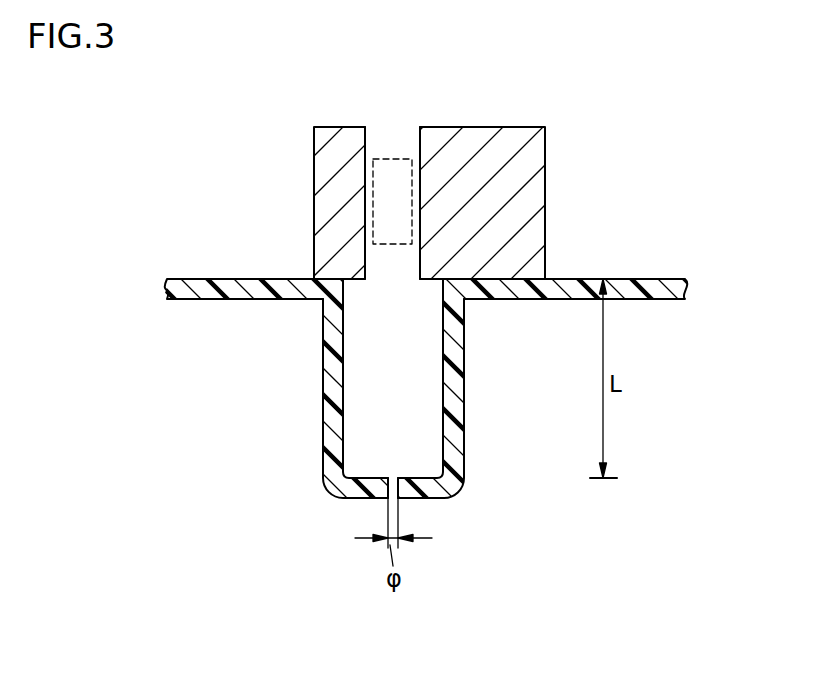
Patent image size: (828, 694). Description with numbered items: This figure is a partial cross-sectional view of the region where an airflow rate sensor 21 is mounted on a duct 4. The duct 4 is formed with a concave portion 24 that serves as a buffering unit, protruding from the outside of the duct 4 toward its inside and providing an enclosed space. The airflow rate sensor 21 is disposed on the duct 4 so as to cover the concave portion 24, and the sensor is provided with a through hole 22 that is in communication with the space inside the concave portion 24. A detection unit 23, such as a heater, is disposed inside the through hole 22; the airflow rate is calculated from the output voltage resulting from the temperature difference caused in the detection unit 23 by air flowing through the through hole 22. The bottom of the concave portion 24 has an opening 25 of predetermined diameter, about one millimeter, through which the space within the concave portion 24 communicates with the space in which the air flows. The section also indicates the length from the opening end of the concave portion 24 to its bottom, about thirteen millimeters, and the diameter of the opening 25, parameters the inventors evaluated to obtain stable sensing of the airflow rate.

The duct 4 is at (198, 288).
The airflow rate sensor 21 is at (501, 196).
The through hole 22 is at (418, 147).
The detection unit 23 is at (371, 197).
The concave portion 24 is at (306, 303).
The opening 25 is at (397, 493).